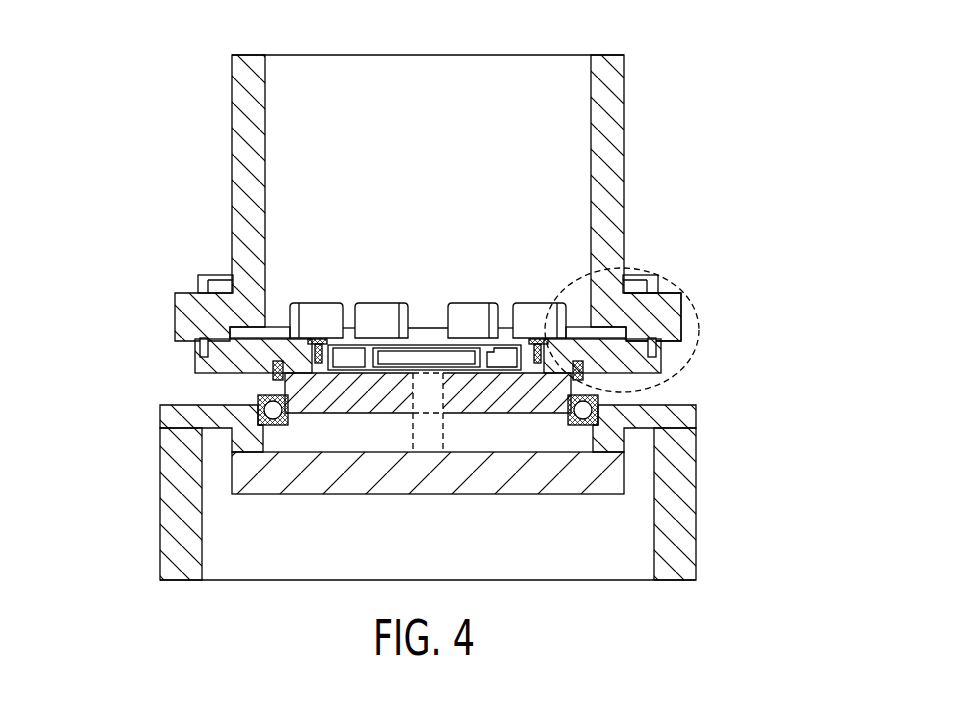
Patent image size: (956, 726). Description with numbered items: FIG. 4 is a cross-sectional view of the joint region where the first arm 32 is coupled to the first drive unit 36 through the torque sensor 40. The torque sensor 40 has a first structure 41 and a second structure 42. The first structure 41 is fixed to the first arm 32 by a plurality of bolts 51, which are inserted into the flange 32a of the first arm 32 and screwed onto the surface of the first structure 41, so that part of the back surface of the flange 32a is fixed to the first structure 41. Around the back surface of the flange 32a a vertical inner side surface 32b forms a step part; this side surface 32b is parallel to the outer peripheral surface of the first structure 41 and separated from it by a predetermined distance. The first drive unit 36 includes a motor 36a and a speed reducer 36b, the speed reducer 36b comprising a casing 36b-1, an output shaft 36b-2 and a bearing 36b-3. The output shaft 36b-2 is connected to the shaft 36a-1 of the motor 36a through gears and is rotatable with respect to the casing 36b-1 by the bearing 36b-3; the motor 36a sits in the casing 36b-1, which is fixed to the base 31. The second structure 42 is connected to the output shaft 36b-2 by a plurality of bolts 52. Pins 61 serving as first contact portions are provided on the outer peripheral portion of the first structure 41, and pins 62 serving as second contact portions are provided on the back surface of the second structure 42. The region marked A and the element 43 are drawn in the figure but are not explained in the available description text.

The base 31 is at (697, 540).
The first arm 32 is at (624, 100).
The flange 32a is at (668, 292).
The side surface 32b is at (655, 330).
The first drive unit 36 is at (449, 448).
The motor 36a is at (514, 459).
The shaft 36a-1 is at (445, 428).
The speed reducer 36b is at (431, 408).
The casing 36b-1 is at (160, 413).
The output shaft 36b-2 is at (287, 388).
The bearing 36b-3 is at (258, 398).
The torque sensor 40 is at (513, 362).
The first structure 41 is at (660, 376).
The second structure 42 is at (577, 386).
The frame 43 is at (600, 392).
The bolts 51 is at (221, 275).
The bolts 52 is at (382, 304).
The pins 61 is at (200, 342).
The pins 62 is at (270, 371).
The detail region A is at (568, 276).